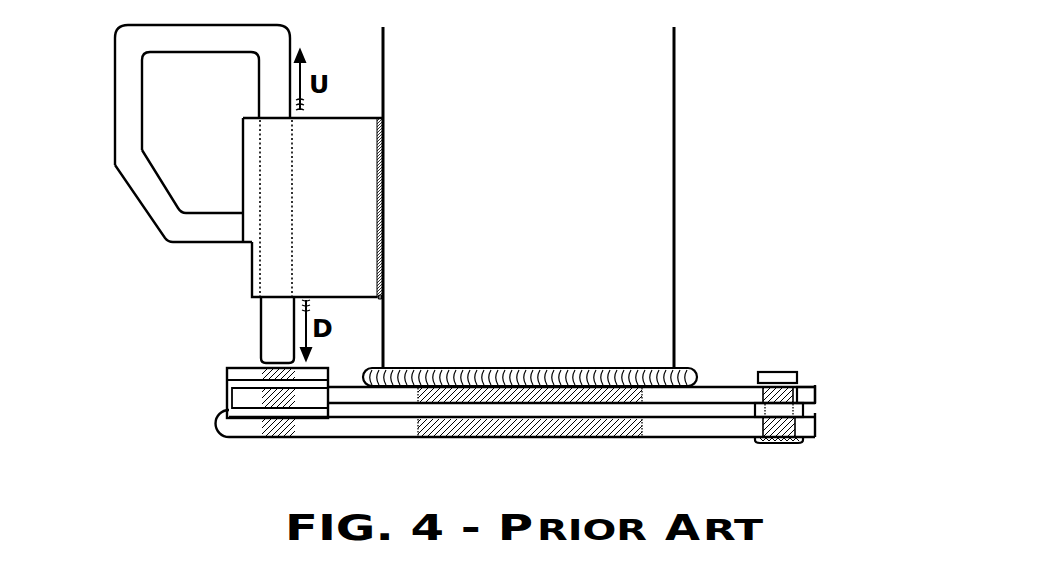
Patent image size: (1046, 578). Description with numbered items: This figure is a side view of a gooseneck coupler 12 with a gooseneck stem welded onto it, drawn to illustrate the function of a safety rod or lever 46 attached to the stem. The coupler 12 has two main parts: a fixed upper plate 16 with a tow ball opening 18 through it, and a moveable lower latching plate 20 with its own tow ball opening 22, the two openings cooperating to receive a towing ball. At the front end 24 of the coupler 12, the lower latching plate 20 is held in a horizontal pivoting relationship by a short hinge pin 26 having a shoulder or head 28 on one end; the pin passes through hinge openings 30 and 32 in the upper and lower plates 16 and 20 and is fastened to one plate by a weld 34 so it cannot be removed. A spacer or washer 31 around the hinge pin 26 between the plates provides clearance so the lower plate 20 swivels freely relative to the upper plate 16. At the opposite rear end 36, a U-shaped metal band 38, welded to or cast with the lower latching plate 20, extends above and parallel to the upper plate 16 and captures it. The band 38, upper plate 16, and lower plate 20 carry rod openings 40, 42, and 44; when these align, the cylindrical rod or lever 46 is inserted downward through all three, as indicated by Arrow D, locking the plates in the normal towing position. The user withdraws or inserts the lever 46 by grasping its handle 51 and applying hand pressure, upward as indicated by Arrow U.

The gooseneck coupler 12 is at (737, 383).
The fixed upper plate 16 is at (713, 380).
The tow ball opening 18 is at (494, 392).
The lower latching plate 20 is at (710, 428).
The tow ball opening 22 is at (552, 423).
The front end 24 is at (818, 388).
The hinge pin 26 is at (780, 371).
The shoulder or head 28 is at (798, 381).
The hinge opening 30 is at (780, 391).
The spacer or washer 31 is at (808, 407).
The hinge opening 32 is at (780, 424).
The weld 34 is at (800, 438).
The rear end 36 is at (210, 427).
The metal band 38 is at (238, 372).
The rod opening 40 is at (276, 373).
The rod opening 42 is at (278, 398).
The rod opening 44 is at (278, 428).
The rod or lever 46 is at (260, 323).
The handle 51 is at (115, 112).